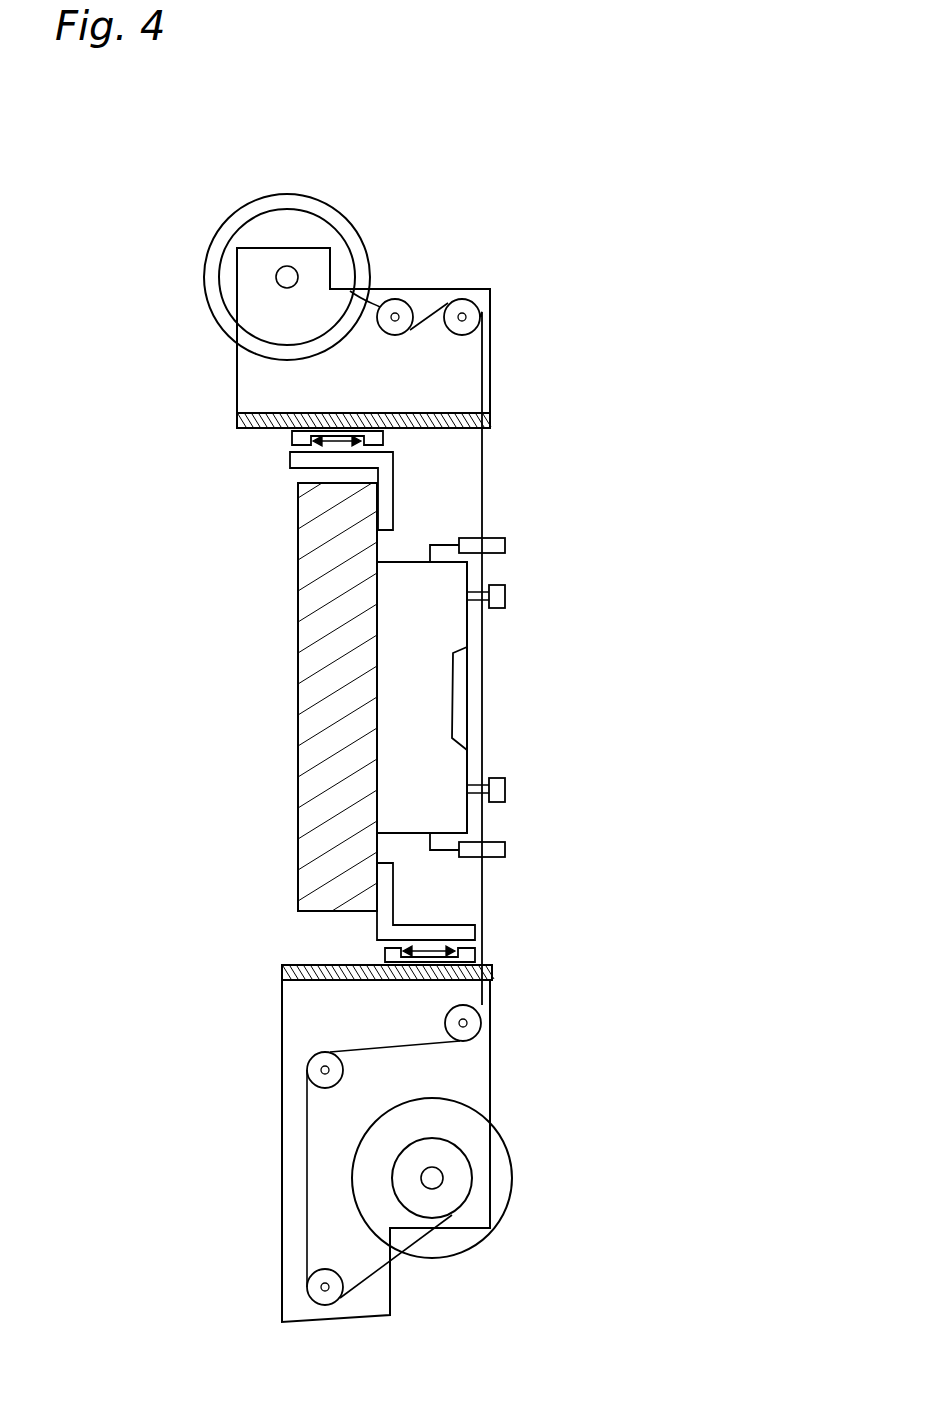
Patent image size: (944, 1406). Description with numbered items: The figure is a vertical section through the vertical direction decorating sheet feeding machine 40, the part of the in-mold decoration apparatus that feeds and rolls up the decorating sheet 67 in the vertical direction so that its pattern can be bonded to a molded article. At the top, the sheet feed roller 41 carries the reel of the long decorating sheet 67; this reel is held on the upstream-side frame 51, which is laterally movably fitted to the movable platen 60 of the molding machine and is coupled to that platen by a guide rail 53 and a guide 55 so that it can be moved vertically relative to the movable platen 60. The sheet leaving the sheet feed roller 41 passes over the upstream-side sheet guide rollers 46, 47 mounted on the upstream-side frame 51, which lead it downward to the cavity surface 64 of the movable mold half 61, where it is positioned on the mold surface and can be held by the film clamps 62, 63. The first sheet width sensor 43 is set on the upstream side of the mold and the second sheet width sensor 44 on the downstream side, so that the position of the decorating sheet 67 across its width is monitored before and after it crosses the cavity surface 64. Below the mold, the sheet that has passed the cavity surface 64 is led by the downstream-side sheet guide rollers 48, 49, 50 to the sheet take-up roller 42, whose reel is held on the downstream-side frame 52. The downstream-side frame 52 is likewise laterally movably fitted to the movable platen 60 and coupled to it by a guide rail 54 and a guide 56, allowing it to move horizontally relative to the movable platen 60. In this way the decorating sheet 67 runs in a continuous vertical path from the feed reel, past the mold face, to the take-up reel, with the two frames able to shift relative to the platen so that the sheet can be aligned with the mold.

The vertical direction decorating sheet feeding machine 40 is at (515, 237).
The sheet feed roller 41 is at (332, 207).
The sheet take-up roller 42 is at (512, 1180).
The first sheet width sensor 43 is at (505, 547).
The second sheet width sensor 44 is at (505, 850).
The upstream-side sheet guide roller 46 is at (399, 298).
The upstream-side sheet guide roller 47 is at (490, 317).
The downstream-side sheet guide roller 48 is at (482, 1038).
The downstream-side sheet guide roller 49 is at (282, 1055).
The downstream-side sheet guide roller 50 is at (282, 1290).
The upstream-side frame 51 is at (490, 385).
The downstream-side frame 52 is at (282, 1158).
The guide rail 53 is at (316, 447).
The guide rail 54 is at (437, 953).
The guide 55 is at (383, 437).
The guide 56 is at (385, 955).
The movable platen 60 is at (298, 650).
The movable mold half 61 is at (390, 753).
The film clamp 62 is at (505, 602).
The film clamp 63 is at (505, 787).
The cavity surface 64 is at (460, 700).
The decorating sheet 67 is at (482, 488).